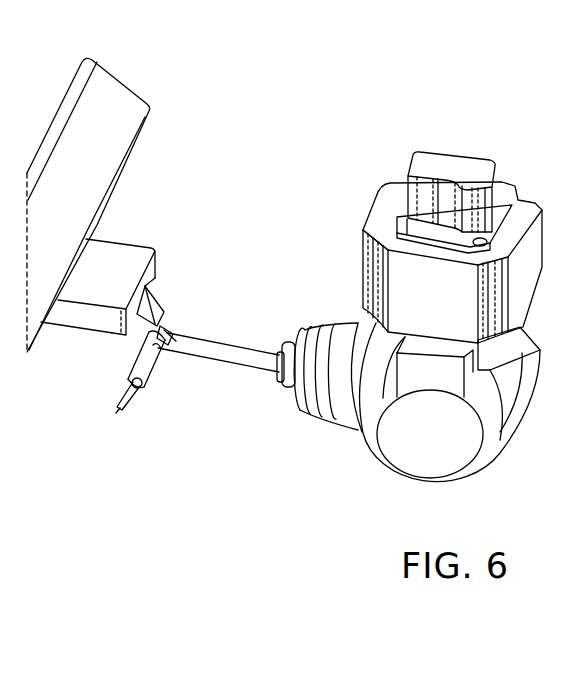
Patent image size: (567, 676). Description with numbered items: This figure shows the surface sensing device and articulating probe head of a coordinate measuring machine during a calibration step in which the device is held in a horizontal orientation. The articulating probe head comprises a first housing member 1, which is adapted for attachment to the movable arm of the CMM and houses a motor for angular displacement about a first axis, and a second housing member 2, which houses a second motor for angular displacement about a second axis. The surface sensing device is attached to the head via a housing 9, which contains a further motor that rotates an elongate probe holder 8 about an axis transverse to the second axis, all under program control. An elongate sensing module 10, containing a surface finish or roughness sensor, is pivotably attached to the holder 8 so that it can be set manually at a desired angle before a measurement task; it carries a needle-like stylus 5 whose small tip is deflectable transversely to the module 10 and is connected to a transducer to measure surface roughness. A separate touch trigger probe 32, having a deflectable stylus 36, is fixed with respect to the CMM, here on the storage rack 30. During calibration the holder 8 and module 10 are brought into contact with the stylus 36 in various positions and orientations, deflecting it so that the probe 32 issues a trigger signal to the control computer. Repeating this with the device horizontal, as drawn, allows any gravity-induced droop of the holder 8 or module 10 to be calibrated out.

The first housing member 1 is at (380, 208).
The second housing member 2 is at (398, 447).
The stylus 5 is at (120, 391).
The probe holder 8 is at (252, 362).
The housing 9 is at (328, 325).
The sensing module 10 is at (150, 377).
The storage rack 30 is at (121, 131).
The touch trigger probe 32 is at (155, 297).
The deflectable stylus 36 is at (172, 337).